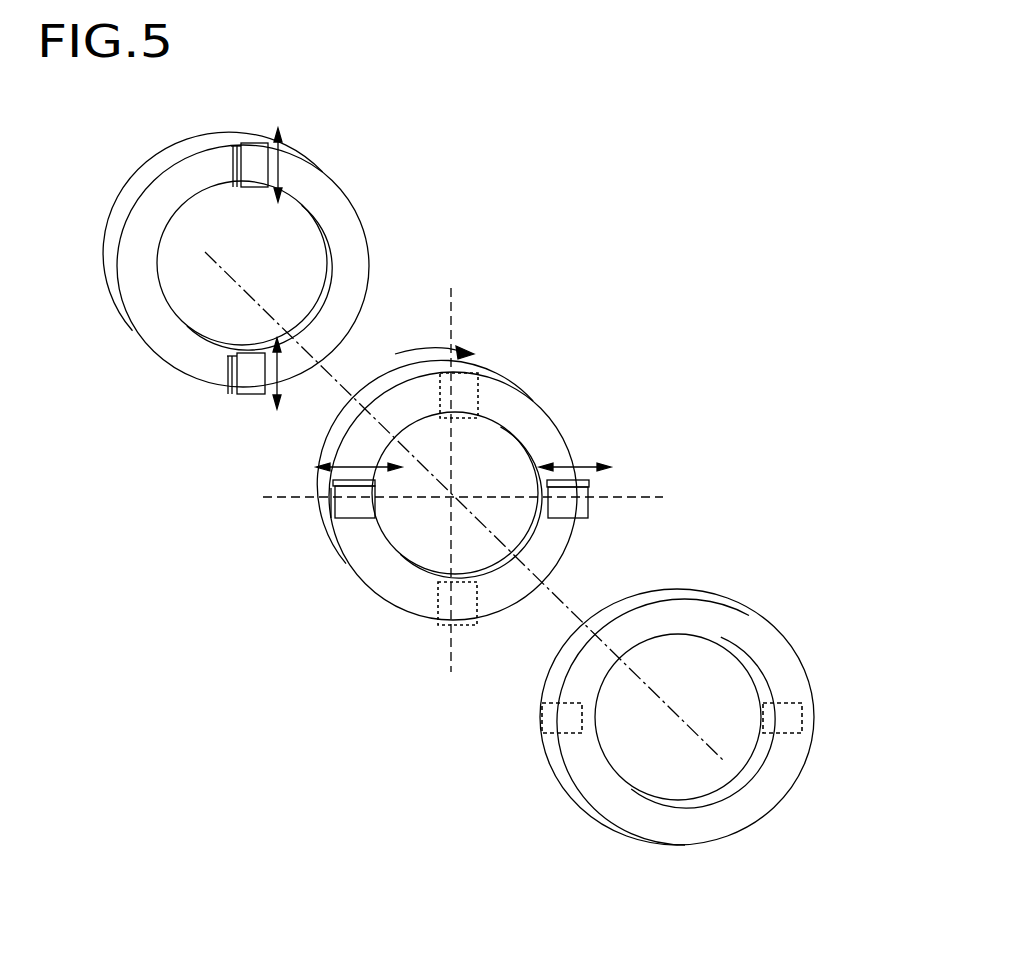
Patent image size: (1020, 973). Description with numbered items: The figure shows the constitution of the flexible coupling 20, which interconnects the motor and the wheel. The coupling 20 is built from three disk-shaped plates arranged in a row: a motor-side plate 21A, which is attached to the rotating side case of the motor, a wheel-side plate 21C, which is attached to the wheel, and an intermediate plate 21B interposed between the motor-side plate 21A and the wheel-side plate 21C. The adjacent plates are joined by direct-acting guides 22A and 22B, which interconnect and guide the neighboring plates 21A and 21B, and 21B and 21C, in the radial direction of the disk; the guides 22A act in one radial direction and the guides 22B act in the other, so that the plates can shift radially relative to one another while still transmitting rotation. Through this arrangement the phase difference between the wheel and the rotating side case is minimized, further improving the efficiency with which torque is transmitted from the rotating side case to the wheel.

The flexible coupling 20 is at (590, 392).
The motor-side plate 21A is at (703, 610).
The intermediate plate 21B is at (388, 577).
The wheel-side plate 21C is at (318, 185).
The direct-acting guide 22A is at (345, 492).
The direct-acting guide 22B is at (245, 163).